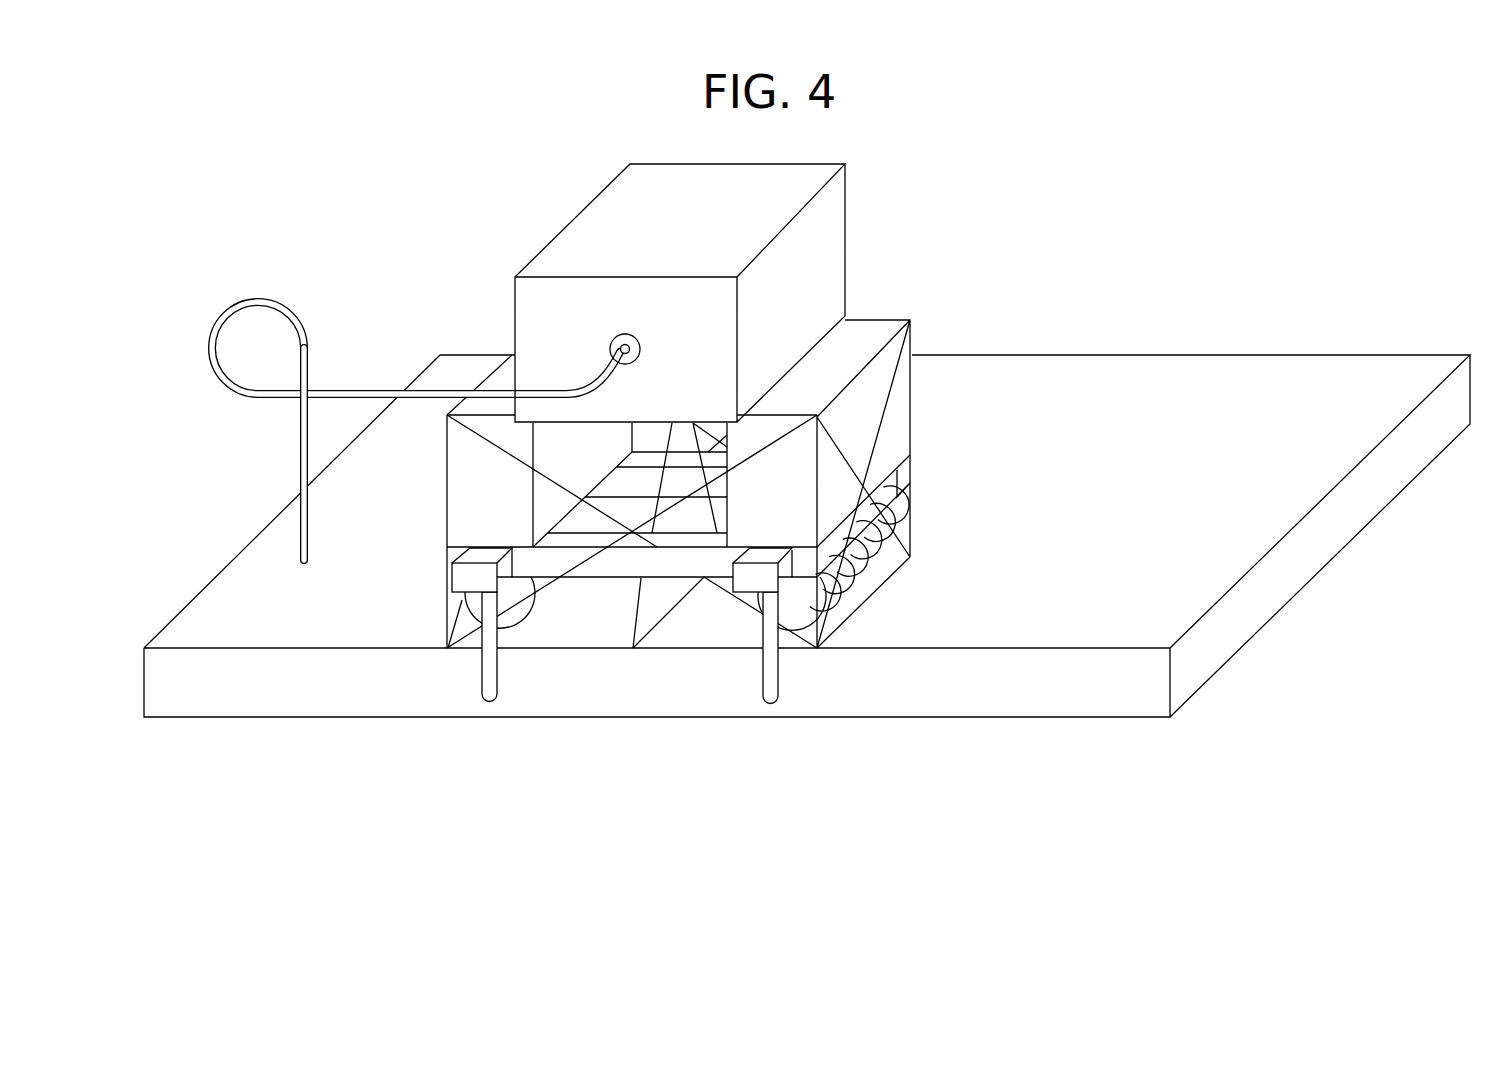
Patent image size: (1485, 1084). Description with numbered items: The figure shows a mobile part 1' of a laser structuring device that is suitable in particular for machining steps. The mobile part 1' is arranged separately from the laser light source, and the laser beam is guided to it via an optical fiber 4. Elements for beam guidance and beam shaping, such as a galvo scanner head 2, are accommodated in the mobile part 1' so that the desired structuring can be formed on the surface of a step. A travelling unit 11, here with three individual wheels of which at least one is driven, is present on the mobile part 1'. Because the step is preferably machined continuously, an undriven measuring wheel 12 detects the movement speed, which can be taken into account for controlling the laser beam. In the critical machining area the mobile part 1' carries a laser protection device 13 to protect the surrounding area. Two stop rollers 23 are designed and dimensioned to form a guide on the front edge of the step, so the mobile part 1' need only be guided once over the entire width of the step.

The mobile part 1' is at (712, 404).
The galvo scanner head 2 is at (800, 283).
The optical fiber 4 is at (357, 390).
The travelling unit 11 is at (512, 618).
The measuring wheel 12 is at (862, 565).
The laser protection device 13 is at (912, 425).
The stop rollers 23 is at (490, 603).